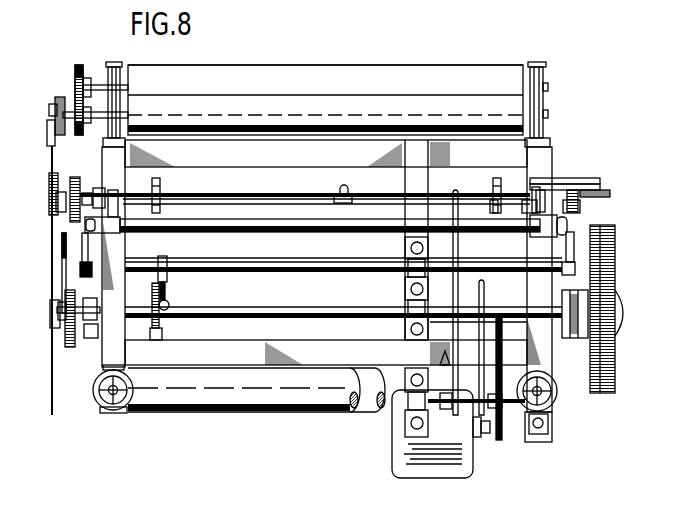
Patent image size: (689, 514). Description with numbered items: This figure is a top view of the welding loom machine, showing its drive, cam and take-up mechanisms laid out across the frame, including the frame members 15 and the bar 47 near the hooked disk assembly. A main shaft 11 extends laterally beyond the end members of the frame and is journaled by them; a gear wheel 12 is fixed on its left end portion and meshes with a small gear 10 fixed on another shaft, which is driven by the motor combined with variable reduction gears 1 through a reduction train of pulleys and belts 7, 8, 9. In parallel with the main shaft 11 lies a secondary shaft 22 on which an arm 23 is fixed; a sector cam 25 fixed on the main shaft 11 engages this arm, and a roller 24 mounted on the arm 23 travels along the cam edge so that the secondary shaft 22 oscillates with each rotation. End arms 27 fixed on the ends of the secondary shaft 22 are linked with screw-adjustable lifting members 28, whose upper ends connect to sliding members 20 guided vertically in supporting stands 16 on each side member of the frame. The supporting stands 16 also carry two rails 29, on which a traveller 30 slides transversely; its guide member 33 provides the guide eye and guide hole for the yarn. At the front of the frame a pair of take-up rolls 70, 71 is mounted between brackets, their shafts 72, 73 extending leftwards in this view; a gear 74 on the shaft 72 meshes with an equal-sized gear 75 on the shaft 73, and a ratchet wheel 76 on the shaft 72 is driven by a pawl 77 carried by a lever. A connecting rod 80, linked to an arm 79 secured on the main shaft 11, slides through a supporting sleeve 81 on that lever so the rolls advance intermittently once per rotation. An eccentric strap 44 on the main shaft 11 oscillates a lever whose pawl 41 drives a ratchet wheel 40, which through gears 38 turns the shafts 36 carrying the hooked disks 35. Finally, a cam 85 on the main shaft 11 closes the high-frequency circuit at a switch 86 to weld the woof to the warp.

The motor combined with variable reduction gears 1 is at (393, 443).
The belt 7 is at (481, 368).
The belt 8 is at (497, 357).
The belt 9 is at (454, 357).
The small gear 10 is at (592, 305).
The main shaft 11 is at (290, 308).
The gear wheel 12 is at (613, 239).
The right side frame 15 is at (550, 346).
The supporting stand 16 is at (112, 190).
The sliding member 20 is at (537, 225).
The secondary shaft 22 is at (338, 263).
The arm 23 is at (167, 290).
The roller 24 is at (163, 317).
The sector cam 25 is at (158, 338).
The end arm 27 is at (82, 246).
The lifting member 28 is at (84, 228).
The rail 29 is at (297, 196).
The traveller 30 is at (337, 195).
The guide member 33 is at (356, 188).
The hooked disk 35 is at (158, 185).
The shaft 36 is at (558, 188).
The gear 38 is at (78, 182).
The ratchet wheel 40 is at (50, 183).
The pawl 41 is at (56, 205).
The eccentric strap 44 is at (70, 335).
The bar 47 is at (607, 190).
The take-up roll 70 is at (273, 95).
The take-up roll 71 is at (298, 72).
The shaft 72 is at (97, 123).
The shaft 73 is at (100, 80).
The gear 74 is at (75, 100).
The gear 75 is at (77, 67).
The ratchet wheel 76 is at (55, 102).
The pawl 77 is at (49, 110).
The arm 79 is at (56, 329).
The connecting rod 80 is at (53, 282).
The supporting sleeve 81 is at (47, 138).
The cam 85 is at (91, 302).
The switch 86 is at (89, 339).